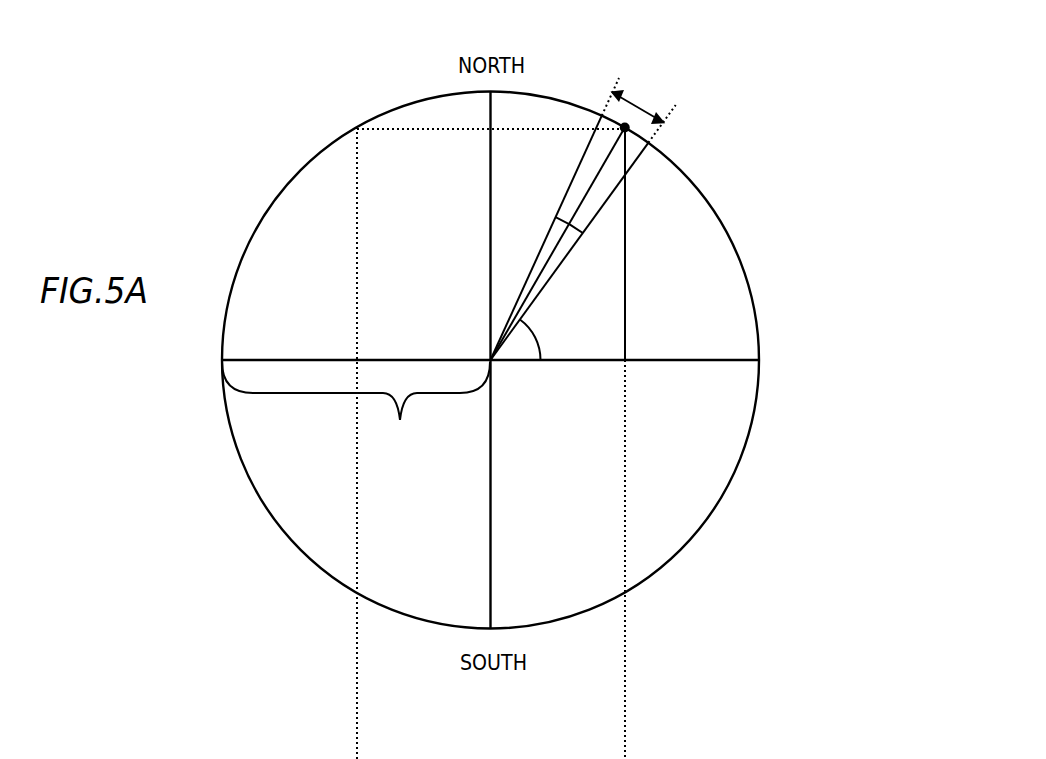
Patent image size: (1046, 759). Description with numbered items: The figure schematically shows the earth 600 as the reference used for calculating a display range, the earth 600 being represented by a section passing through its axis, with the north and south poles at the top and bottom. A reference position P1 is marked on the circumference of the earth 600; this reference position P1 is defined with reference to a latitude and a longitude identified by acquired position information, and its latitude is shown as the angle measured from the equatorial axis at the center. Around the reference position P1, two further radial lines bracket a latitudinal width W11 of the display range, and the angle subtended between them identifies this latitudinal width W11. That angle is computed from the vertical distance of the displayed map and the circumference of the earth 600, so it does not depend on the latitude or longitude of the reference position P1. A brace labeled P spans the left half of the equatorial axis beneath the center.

The earth 600 is at (818, 185).
The reference position P1 is at (625, 127).
The latitudinal width W11 is at (650, 100).
The radius distance P is at (356, 407).